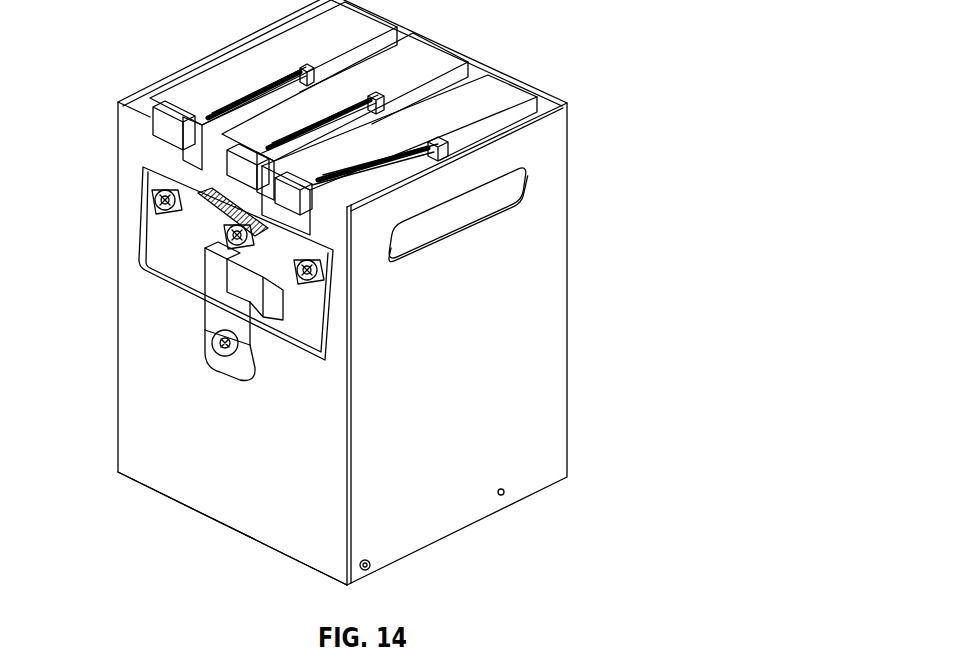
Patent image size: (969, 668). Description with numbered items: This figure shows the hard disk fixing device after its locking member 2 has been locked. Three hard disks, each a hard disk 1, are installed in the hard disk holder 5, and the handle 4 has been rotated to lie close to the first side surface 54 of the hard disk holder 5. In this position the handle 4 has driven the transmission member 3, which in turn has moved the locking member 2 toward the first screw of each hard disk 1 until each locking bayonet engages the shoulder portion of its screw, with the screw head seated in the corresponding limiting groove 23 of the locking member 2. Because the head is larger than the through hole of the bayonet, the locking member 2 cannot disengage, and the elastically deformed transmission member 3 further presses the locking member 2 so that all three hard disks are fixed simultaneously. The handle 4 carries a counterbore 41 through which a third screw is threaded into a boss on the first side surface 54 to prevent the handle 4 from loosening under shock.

The hard disk 1 is at (200, 103).
The locking member 2 is at (150, 165).
The transmission member 3 is at (150, 211).
The handle 4 is at (215, 298).
The counterbore 41 is at (208, 343).
The limiting groove 23 is at (330, 270).
The hard disk holder 5 is at (470, 358).
The first side surface 54 is at (208, 396).